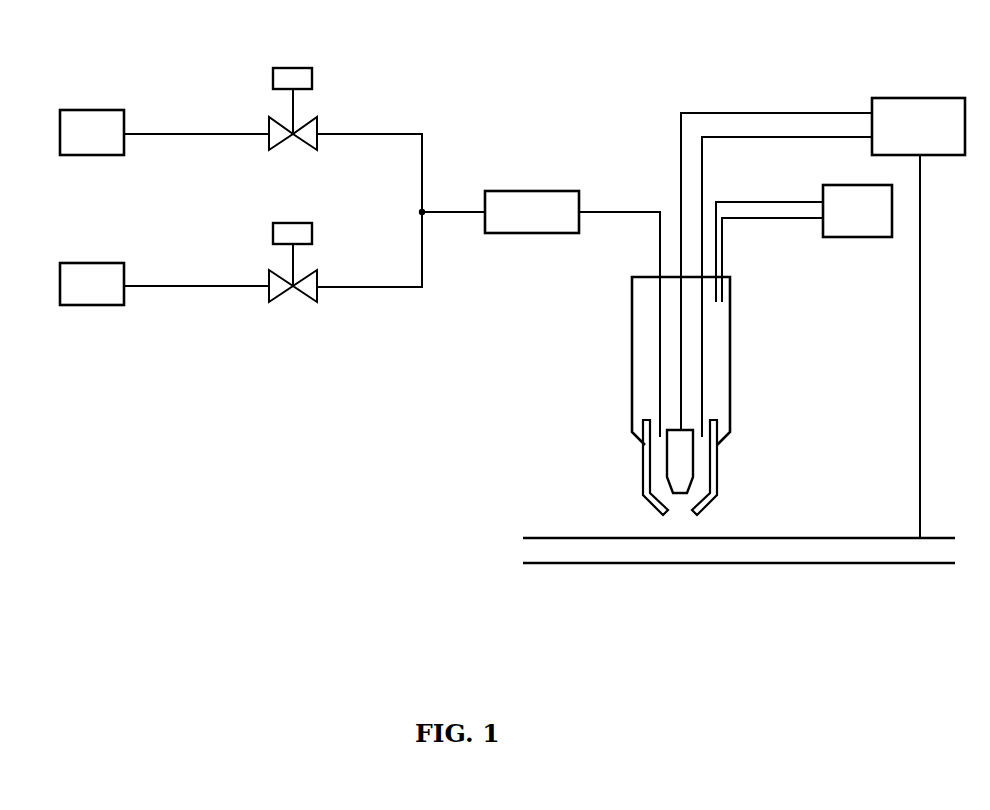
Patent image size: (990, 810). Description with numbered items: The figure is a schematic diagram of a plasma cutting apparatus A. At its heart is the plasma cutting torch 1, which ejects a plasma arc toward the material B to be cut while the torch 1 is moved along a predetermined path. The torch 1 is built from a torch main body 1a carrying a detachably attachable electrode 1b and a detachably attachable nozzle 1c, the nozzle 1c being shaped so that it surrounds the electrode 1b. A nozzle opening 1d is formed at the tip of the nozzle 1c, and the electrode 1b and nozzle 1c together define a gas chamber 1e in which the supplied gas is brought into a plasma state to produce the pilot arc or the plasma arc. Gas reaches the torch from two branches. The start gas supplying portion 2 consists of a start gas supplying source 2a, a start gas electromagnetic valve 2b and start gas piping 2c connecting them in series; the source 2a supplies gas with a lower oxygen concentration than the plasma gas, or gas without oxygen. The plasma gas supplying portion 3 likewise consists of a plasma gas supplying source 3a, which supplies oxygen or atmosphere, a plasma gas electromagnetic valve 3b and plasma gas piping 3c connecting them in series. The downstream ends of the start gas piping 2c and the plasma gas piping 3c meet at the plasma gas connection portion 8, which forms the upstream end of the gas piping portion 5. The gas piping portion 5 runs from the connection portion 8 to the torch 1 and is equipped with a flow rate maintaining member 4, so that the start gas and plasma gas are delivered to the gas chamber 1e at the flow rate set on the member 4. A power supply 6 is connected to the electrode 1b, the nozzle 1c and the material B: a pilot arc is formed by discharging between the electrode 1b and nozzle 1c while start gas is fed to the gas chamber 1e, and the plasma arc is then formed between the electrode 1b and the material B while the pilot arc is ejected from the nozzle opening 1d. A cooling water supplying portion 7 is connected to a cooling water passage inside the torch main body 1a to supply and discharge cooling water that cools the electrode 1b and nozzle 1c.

The plasma cutting torch 1 is at (659, 447).
The torch main body 1a is at (632, 358).
The electrode 1b is at (676, 466).
The nozzle 1c is at (655, 512).
The nozzle opening 1d is at (678, 513).
The gas chamber 1e is at (712, 505).
The start gas supplying portion 2 is at (197, 128).
The start gas supplying source 2a is at (81, 110).
The start gas electromagnetic valve 2b is at (299, 72).
The start gas piping 2c is at (365, 133).
The plasma gas supplying portion 3 is at (187, 288).
The plasma gas supplying source 3a is at (87, 305).
The plasma gas electromagnetic valve 3b is at (312, 233).
The plasma gas piping 3c is at (357, 288).
The flow rate maintaining member 4 is at (527, 190).
The gas piping portion 5 is at (620, 211).
The power supply 6 is at (905, 98).
The cooling water supplying portion 7 is at (871, 238).
The plasma gas connection portion 8 is at (424, 214).
The plasma cutting apparatus A is at (466, 340).
The material to be cut B is at (860, 553).